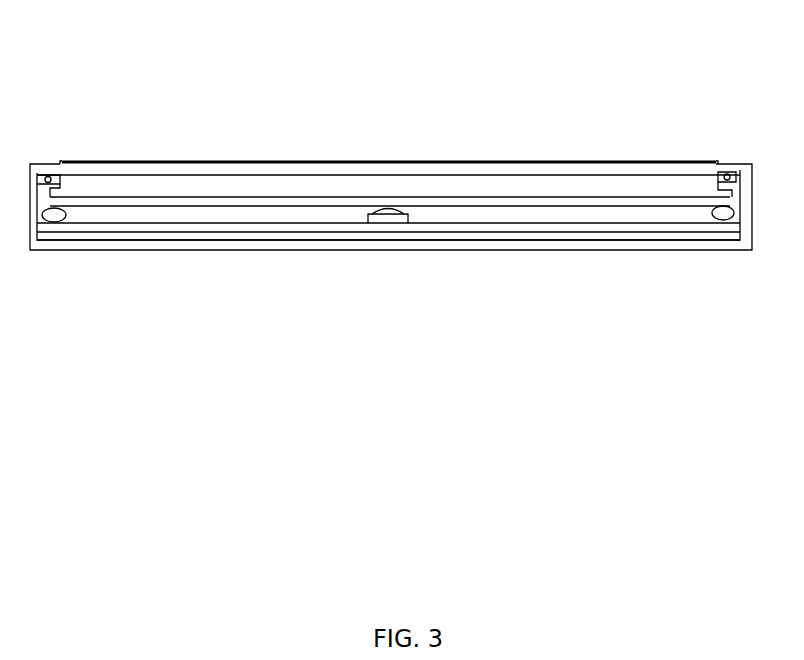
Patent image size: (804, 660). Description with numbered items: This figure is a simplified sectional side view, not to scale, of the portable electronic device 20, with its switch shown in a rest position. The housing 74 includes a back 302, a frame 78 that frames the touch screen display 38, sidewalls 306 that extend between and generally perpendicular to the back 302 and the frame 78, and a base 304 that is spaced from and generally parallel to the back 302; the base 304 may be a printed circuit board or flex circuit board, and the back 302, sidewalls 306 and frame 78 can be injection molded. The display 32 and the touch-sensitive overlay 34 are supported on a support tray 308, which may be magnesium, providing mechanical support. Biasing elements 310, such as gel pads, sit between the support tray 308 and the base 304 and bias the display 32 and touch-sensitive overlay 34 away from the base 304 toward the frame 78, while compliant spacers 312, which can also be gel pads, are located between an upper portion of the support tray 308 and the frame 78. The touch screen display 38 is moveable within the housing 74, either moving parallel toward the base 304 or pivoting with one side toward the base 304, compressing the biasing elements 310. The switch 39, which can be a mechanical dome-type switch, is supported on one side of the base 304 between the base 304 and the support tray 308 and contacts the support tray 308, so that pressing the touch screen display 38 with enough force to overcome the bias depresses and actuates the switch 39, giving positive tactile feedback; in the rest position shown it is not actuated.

The portable electronic device 20 is at (567, 72).
The housing 74 is at (40, 258).
The frame 78 is at (53, 166).
The touch screen display 38 is at (141, 157).
The touch-sensitive overlay 34 is at (370, 175).
The display 32 is at (300, 187).
The switch 39 is at (388, 215).
The base 304 is at (235, 223).
The back 302 is at (455, 242).
The sidewalls 306 is at (747, 228).
The support tray 308 is at (735, 193).
The biasing elements 310 is at (723, 212).
The compliant spacers 312 is at (728, 172).